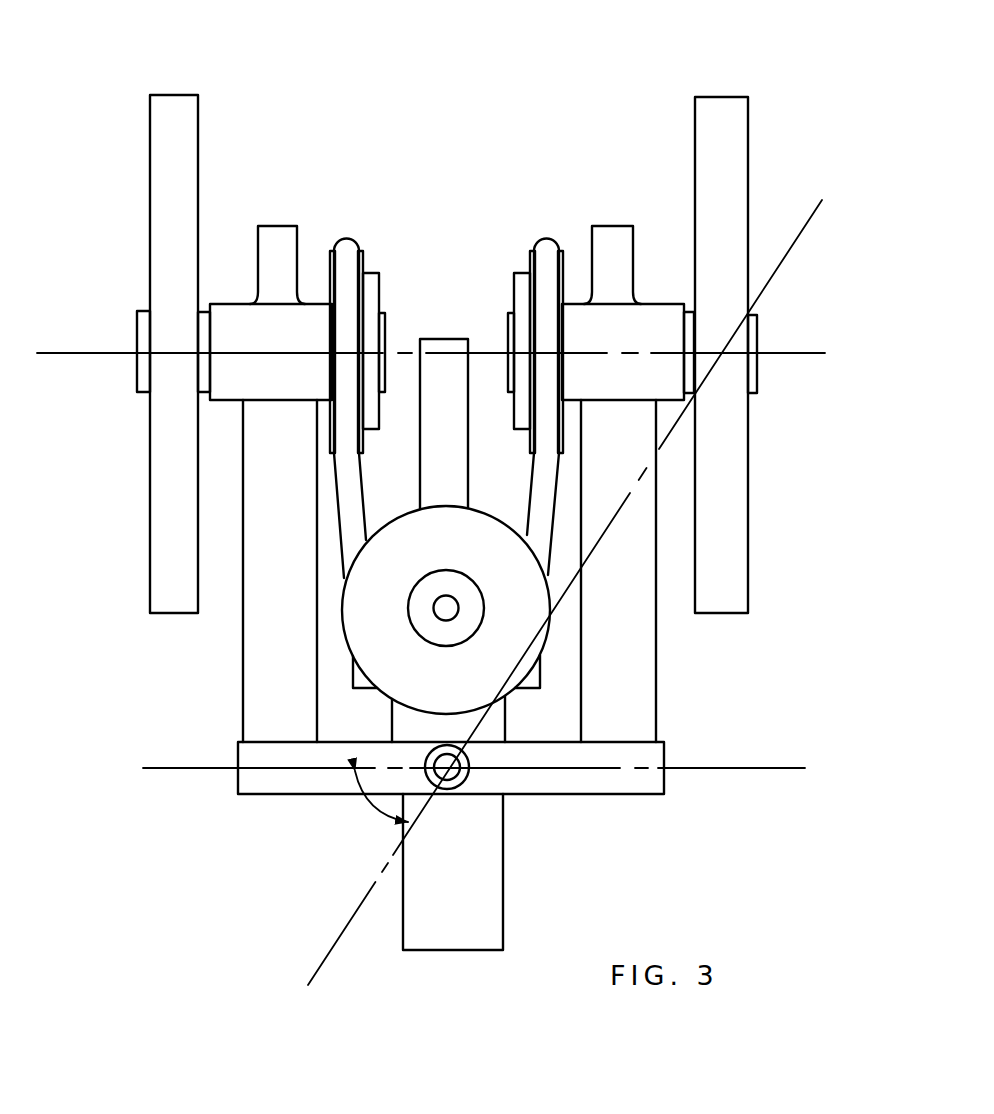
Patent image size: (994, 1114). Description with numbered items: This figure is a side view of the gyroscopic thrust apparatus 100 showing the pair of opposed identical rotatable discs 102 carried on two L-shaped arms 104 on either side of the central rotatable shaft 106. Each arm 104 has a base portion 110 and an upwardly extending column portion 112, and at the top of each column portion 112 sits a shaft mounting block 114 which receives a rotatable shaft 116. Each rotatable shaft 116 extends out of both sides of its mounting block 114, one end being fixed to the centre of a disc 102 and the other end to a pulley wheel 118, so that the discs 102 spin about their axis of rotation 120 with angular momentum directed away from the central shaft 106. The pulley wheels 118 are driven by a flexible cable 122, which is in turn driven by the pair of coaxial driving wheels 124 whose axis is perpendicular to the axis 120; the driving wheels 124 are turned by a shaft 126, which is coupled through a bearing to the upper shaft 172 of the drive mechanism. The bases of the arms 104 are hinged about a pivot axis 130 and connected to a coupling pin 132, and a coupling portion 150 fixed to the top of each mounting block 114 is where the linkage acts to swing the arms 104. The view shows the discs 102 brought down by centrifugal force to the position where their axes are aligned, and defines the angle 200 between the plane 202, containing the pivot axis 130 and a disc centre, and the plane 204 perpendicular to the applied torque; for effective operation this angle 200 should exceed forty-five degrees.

The gyroscopic thrust apparatus 100 is at (558, 90).
The rotatable disc 102 is at (238, 148).
The arm 104 is at (267, 697).
The central rotatable shaft 106 is at (493, 510).
The base portion 110 is at (343, 777).
The column portion 112 is at (294, 597).
The shaft mounting block 114 is at (290, 342).
The rotatable shaft 116 is at (204, 320).
The pulley wheel 118 is at (368, 262).
The axis of rotation 120 is at (120, 354).
The flexible cable 122 is at (350, 514).
The driving wheel 124 is at (425, 677).
The shaft 126 is at (470, 628).
The pivot axis 130 is at (465, 780).
The coupling pin 132 is at (382, 809).
The coupling portion 150 is at (613, 243).
The shaft 172 is at (495, 907).
The angle 200 is at (384, 810).
The plane 202 is at (758, 297).
The plane 204 is at (740, 772).